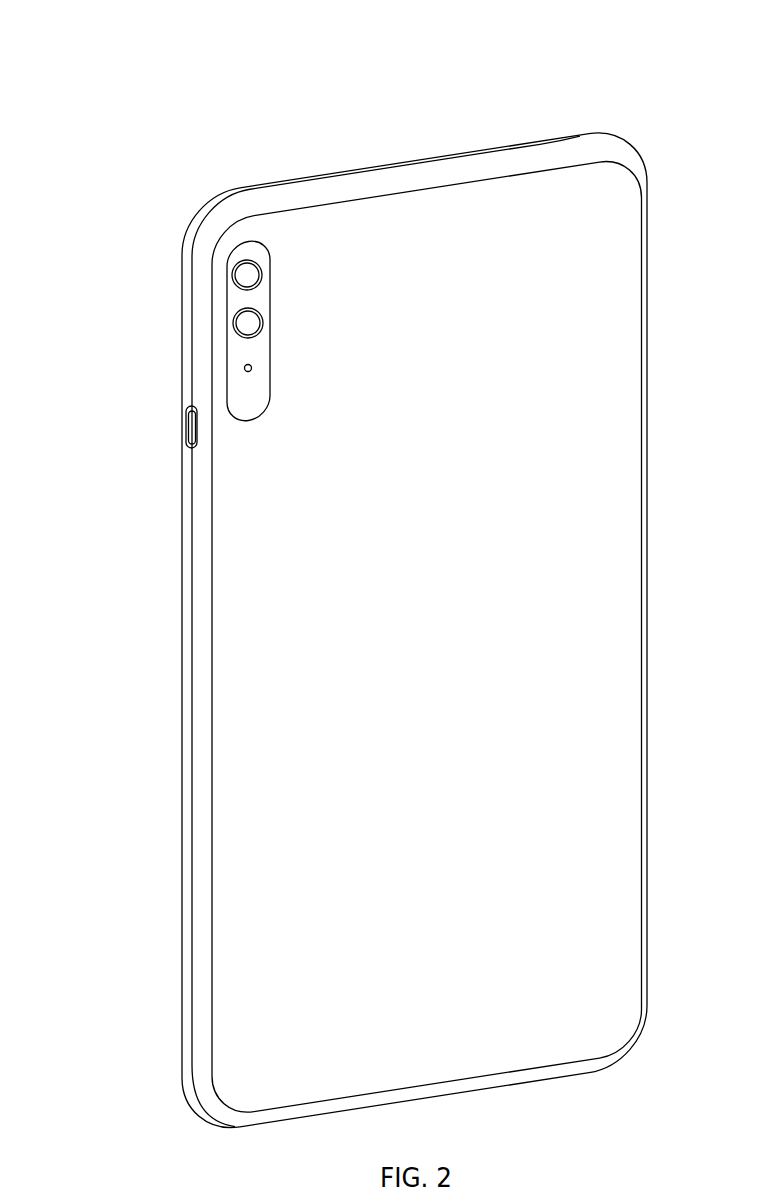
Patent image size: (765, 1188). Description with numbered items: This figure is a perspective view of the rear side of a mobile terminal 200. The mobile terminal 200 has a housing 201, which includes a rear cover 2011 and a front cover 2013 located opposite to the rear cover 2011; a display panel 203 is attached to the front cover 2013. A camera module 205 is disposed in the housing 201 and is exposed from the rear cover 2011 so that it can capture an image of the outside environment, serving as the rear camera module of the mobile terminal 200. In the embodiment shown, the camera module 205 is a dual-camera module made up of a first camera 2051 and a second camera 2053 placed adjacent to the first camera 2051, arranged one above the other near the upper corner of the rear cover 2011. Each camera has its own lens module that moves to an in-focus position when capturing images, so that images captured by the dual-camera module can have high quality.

The mobile terminal 200 is at (322, 102).
The housing 201 is at (138, 104).
The rear cover 2011 is at (323, 228).
The front cover 2013 is at (197, 193).
The display panel 203 is at (162, 375).
The camera module 205 is at (112, 238).
The first camera 2051 is at (242, 276).
The second camera 2053 is at (243, 325).